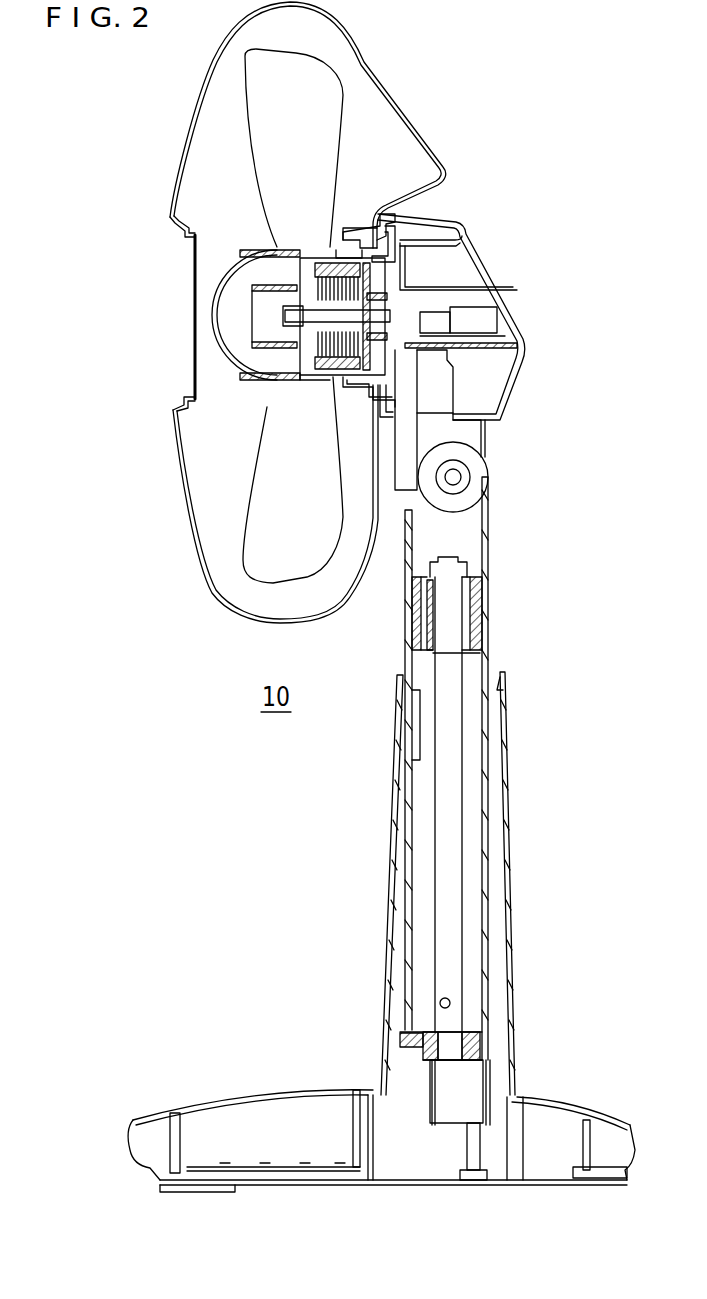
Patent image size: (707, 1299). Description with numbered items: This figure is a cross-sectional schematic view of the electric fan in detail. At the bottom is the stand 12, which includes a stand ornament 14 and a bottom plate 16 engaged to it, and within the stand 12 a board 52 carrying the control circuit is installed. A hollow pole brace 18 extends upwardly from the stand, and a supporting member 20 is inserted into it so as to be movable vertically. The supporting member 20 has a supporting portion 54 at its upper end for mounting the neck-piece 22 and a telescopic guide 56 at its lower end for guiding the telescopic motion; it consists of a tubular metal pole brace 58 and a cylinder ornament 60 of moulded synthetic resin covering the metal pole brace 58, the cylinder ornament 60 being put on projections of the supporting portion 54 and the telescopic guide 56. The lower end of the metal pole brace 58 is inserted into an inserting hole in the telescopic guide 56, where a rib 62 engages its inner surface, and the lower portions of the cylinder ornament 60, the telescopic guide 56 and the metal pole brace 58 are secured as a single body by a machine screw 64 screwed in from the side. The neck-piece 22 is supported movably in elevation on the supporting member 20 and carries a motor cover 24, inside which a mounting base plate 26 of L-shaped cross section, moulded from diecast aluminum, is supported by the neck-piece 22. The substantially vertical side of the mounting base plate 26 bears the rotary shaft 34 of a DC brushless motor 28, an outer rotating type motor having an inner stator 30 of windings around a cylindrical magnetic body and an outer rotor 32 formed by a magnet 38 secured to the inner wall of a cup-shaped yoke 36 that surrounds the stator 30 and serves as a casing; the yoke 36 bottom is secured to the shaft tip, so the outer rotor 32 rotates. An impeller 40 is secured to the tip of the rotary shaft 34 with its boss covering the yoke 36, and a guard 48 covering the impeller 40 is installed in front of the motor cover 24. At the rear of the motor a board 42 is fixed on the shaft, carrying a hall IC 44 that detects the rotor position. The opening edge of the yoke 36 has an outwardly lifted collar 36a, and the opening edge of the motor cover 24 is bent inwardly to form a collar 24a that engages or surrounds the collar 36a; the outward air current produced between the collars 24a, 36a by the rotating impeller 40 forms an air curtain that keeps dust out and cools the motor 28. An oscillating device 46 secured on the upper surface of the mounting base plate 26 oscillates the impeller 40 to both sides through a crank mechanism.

The stand 12 is at (552, 1092).
The stand ornament 14 is at (253, 1093).
The bottom plate 16 is at (293, 1187).
The pole brace 18 is at (507, 855).
The supporting member 20 is at (492, 655).
The neck-piece 22 is at (478, 436).
The motor cover 24 is at (505, 294).
The collar 24a is at (338, 243).
The mounting base plate 26 is at (480, 350).
The DC brushless motor 28 is at (273, 377).
The inner stator 30 is at (313, 352).
The outer rotor 32 is at (292, 275).
The rotary shaft 34 is at (283, 315).
The yoke 36 is at (260, 362).
The collar 36a is at (400, 215).
The magnet 38 is at (313, 378).
The impeller 40 is at (268, 165).
The board 42 is at (375, 282).
The hall IC 44 is at (415, 222).
The oscillating device 46 is at (480, 322).
The guard 48 is at (423, 120).
The board 52 is at (283, 1163).
The supporting portion 54 is at (488, 543).
The telescopic guide 56 is at (403, 1037).
The metal pole brace 58 is at (432, 824).
The cylinder ornament 60 is at (407, 788).
The rib 62 is at (453, 1053).
The machine screw 64 is at (445, 998).